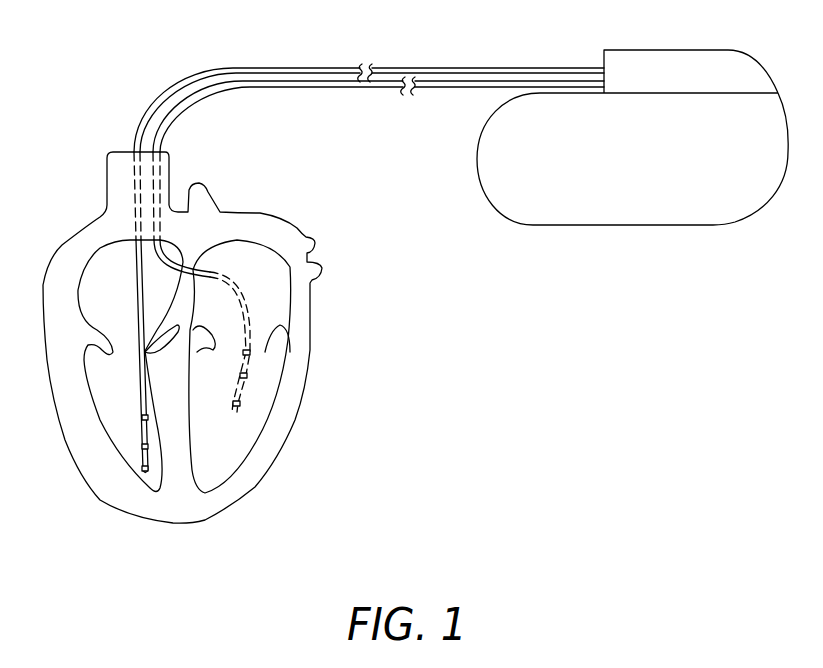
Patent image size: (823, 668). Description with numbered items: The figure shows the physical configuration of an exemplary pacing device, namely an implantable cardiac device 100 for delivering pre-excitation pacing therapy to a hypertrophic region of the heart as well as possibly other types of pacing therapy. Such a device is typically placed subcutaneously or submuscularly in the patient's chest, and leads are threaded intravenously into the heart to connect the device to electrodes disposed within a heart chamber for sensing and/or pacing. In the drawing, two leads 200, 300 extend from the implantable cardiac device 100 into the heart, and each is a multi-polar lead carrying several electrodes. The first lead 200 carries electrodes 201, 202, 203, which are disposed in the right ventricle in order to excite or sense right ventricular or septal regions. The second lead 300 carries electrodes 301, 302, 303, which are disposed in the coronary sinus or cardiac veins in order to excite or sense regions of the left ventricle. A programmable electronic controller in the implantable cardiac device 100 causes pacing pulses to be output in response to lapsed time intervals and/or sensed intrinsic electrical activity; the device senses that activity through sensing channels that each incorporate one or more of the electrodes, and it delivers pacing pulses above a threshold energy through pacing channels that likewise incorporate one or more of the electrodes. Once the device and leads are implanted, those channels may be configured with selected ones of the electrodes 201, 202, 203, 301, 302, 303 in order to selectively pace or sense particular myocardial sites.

The implantable cardiac device 100 is at (765, 63).
The lead 200 is at (271, 67).
The electrode 201 is at (142, 418).
The electrode 202 is at (142, 447).
The electrode 203 is at (145, 471).
The lead 300 is at (303, 90).
The electrode 301 is at (238, 404).
The electrode 302 is at (245, 376).
The electrode 303 is at (247, 353).